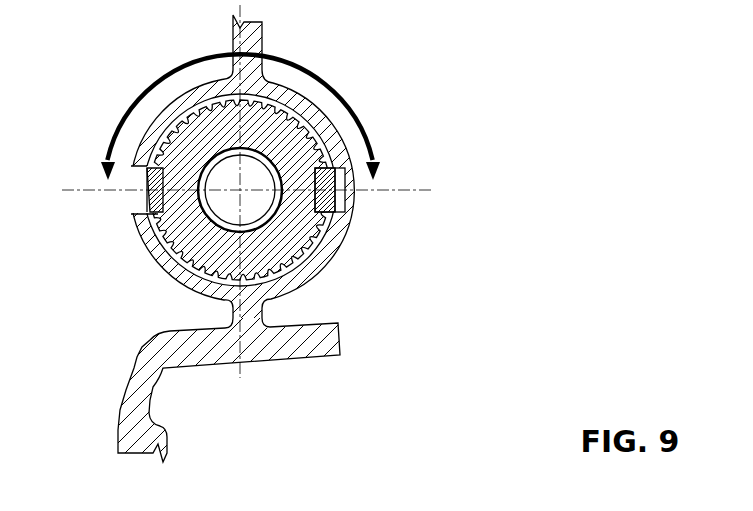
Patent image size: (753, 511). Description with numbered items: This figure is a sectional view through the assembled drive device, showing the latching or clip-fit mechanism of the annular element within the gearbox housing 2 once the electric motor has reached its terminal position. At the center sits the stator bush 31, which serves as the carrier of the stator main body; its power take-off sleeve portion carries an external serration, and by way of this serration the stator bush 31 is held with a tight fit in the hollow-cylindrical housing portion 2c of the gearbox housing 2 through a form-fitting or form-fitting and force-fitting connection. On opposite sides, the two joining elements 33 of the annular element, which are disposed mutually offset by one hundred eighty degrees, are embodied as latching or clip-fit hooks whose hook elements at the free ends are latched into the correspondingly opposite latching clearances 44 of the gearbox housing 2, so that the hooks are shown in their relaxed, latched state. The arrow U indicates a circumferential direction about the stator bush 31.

The gearbox housing 2 is at (287, 345).
The hollow-cylindrical housing portion 2c is at (322, 260).
The stator bush 31 is at (197, 147).
The joining elements 33 is at (150, 192).
The latching clearance 44 is at (141, 203).
The circumferential direction U is at (335, 88).